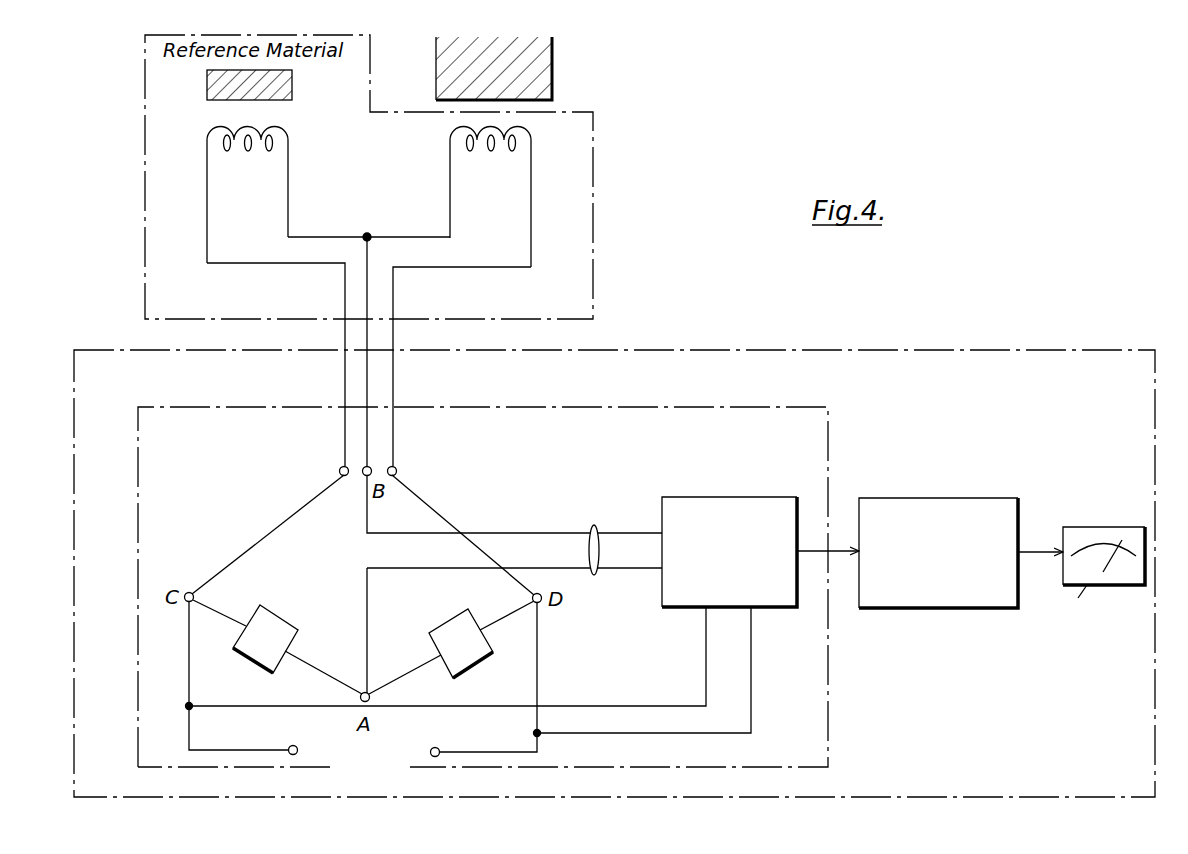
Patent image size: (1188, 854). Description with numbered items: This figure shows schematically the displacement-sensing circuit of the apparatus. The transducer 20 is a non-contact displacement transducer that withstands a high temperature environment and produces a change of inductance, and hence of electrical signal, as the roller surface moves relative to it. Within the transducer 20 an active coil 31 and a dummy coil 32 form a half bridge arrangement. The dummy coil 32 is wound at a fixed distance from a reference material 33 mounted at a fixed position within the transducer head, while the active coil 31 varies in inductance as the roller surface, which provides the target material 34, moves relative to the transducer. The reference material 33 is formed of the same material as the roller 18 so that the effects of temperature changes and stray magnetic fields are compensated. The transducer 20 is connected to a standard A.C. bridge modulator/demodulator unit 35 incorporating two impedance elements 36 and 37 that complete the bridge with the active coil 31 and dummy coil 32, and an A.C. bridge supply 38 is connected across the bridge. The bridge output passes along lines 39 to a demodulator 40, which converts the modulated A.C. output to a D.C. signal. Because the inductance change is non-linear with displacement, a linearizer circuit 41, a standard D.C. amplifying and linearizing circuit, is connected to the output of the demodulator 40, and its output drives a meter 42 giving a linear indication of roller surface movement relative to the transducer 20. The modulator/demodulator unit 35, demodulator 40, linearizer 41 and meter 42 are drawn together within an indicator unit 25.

The roller 18 is at (545, 70).
The transducer 20 is at (593, 140).
The indicator unit 25 is at (983, 350).
The active coil 31 is at (533, 137).
The dummy coil 32 is at (290, 138).
The reference material 33 is at (292, 88).
The target material 34 is at (551, 101).
The A.C. bridge modulator/demodulator unit 35 is at (694, 404).
The impedance element 36 is at (270, 610).
The impedance element 37 is at (450, 626).
The A.C. bridge supply 38 is at (293, 745).
The lines 39 is at (597, 522).
The demodulator 40 is at (729, 552).
The linearizer circuit 41 is at (973, 499).
The meter 42 is at (1097, 527).